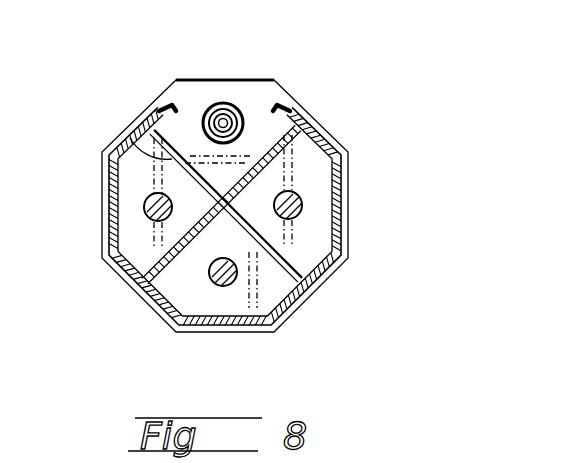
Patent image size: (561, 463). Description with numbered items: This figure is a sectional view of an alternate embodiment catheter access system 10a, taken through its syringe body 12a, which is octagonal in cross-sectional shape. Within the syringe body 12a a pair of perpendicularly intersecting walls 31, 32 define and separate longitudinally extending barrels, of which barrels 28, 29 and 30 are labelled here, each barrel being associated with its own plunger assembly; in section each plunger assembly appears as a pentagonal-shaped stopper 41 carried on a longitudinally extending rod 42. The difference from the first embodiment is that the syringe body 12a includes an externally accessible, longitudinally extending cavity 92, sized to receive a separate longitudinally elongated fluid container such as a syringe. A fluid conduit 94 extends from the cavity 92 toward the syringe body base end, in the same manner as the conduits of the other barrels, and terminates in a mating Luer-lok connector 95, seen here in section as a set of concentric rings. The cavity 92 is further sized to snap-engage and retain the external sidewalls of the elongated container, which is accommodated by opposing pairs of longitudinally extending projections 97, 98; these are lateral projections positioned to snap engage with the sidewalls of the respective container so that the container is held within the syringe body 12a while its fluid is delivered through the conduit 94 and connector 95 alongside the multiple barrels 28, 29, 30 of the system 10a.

The alternate embodiment catheter access system 10a is at (349, 38).
The syringe body 12a is at (281, 118).
The barrel 28 is at (307, 243).
The barrel 29 is at (205, 302).
The barrel 30 is at (140, 243).
The wall 31 is at (282, 156).
The wall 32 is at (126, 138).
The stopper 41 is at (132, 171).
The rod 42 is at (145, 203).
The cavity 92 is at (264, 100).
The fluid conduit 94 is at (234, 103).
The Luer-lok connector 95 is at (212, 105).
The projection 97 is at (163, 106).
The projection 98 is at (292, 104).